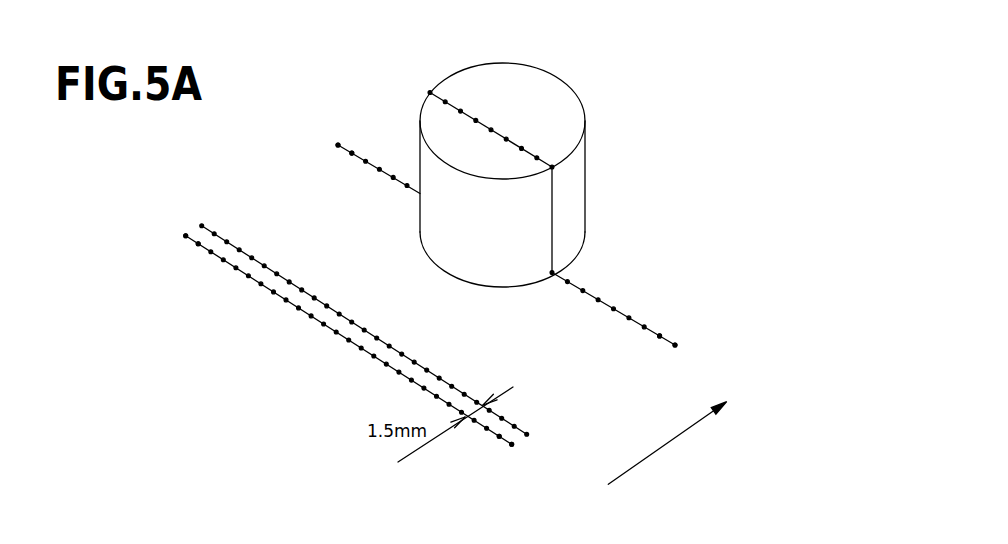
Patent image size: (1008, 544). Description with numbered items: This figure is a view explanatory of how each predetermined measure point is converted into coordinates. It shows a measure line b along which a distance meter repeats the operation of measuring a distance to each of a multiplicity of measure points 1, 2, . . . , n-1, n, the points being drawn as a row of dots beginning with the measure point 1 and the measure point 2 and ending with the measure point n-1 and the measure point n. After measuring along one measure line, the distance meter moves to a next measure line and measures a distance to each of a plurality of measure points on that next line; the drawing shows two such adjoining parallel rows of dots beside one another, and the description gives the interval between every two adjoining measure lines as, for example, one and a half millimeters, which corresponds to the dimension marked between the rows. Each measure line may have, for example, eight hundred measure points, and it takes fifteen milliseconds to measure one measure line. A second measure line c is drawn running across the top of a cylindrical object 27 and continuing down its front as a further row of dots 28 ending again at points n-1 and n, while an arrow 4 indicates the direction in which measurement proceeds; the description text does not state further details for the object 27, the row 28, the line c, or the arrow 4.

The cylindrical object (substrate) 27 is at (545, 98).
The row of measurement points (line of dots) 28 is at (648, 256).
The measurement line c on object c is at (360, 148).
The measure line b is at (264, 289).
The measure point 1 is at (338, 145).
The measure point 2 is at (352, 153).
The measure point n-1 is at (660, 336).
The measure point n is at (675, 345).
The scanning direction arrow 4 is at (667, 443).